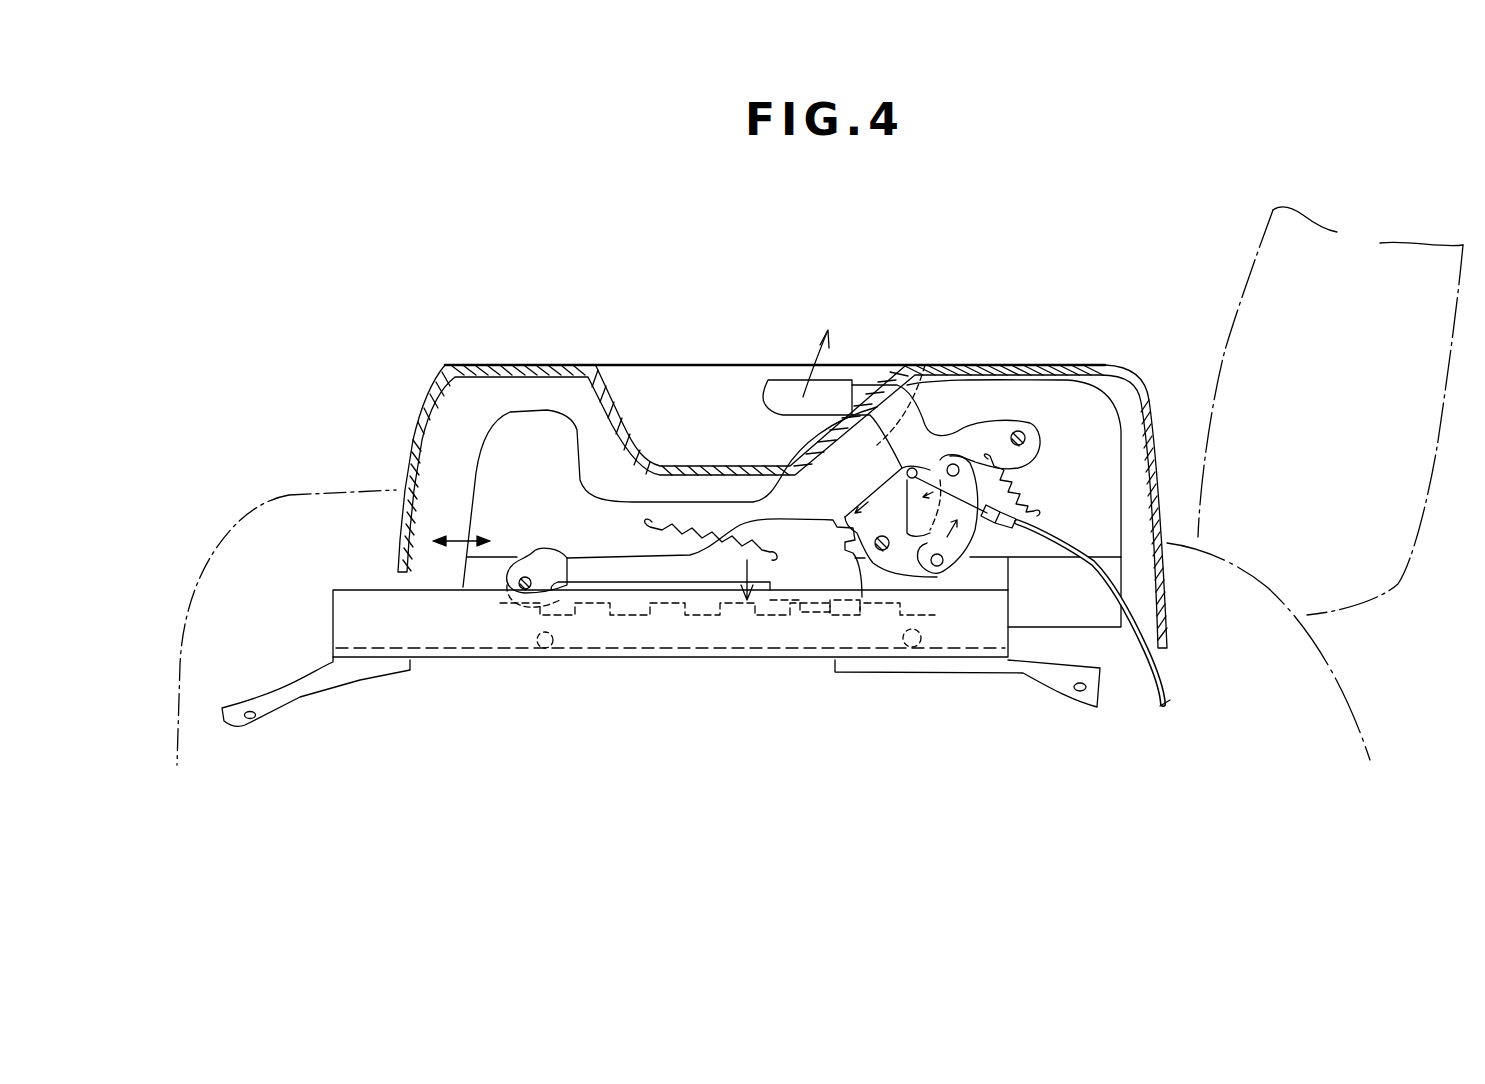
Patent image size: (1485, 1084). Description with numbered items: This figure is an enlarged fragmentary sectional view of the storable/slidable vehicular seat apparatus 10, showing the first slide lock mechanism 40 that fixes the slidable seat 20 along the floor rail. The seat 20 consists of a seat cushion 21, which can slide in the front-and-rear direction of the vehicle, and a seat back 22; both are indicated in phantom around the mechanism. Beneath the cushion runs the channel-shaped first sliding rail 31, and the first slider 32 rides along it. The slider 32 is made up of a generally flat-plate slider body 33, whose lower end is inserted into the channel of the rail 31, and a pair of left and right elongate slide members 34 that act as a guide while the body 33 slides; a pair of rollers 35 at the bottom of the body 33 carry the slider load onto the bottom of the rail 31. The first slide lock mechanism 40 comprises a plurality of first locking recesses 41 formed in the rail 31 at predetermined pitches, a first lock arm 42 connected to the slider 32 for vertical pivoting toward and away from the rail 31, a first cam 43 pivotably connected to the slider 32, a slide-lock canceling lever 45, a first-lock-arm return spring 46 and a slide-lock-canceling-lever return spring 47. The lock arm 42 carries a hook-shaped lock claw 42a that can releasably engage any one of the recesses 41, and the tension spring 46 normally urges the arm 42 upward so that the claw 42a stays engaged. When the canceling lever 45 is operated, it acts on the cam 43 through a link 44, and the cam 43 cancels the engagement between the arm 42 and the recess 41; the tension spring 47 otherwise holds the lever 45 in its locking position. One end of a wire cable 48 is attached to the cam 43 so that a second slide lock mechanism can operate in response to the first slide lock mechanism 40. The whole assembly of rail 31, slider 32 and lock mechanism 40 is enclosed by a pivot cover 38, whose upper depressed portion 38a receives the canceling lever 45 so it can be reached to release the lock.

The storable/slidable vehicular seat apparatus 10 is at (410, 168).
The slidable seat 20 is at (247, 488).
The seat cushion 21 is at (334, 490).
The seat back 22 is at (1257, 242).
The first sliding rail 31 is at (432, 638).
The first slider 32 is at (1060, 640).
The slider body 33 is at (1080, 413).
The slide members 34 is at (1095, 605).
The rollers 35 is at (545, 640).
The pivot cover 38 is at (504, 370).
The upper depressed portion 38a is at (655, 420).
The first slide lock mechanism 40 is at (625, 700).
The first locking recesses 41 is at (718, 616).
The first lock arm 42 is at (568, 568).
The lock claw 42a is at (800, 617).
The first cam 43 is at (895, 487).
The link 44 is at (970, 530).
The slide-lock canceling lever 45 is at (875, 392).
The first-lock-arm return spring 46 is at (720, 530).
The slide-lock-canceling-lever return spring 47 is at (1000, 497).
The wire cable 48 is at (1072, 543).